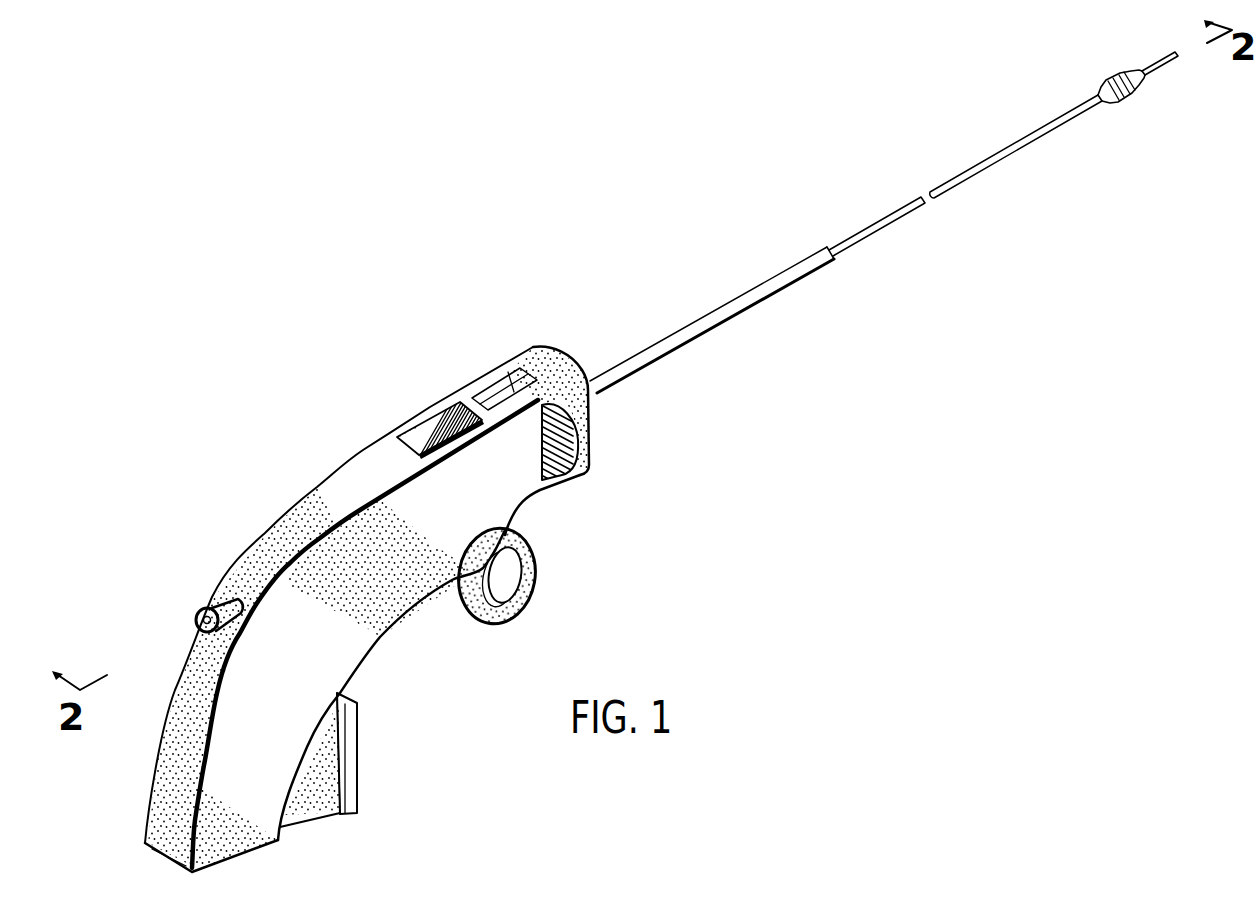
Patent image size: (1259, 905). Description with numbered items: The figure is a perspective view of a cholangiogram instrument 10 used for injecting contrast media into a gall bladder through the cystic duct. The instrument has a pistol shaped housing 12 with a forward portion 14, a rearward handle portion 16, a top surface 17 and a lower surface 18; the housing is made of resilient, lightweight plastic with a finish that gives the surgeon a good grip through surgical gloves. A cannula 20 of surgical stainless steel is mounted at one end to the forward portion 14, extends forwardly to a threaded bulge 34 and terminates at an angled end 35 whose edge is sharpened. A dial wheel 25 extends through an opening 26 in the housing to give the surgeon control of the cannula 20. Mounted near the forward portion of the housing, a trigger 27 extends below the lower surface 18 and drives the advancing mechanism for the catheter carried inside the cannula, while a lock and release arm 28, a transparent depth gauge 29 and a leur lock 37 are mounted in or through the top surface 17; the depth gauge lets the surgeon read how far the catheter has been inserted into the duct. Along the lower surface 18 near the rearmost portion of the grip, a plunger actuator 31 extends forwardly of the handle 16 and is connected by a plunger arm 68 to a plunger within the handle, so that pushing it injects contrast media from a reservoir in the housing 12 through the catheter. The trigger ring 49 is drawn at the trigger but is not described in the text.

The instrument 10 is at (697, 118).
The housing 12 is at (301, 498).
The forward portion 14 is at (584, 368).
The rearward handle portion 16 is at (167, 772).
The top surface 17 is at (356, 472).
The lower surface 18 is at (383, 632).
The cannula 20 is at (849, 234).
The dial wheel 25 is at (580, 474).
The opening 26 is at (543, 460).
The trigger 27 is at (490, 624).
The lock and release arm 28 is at (430, 410).
The depth gauge 29 is at (507, 372).
The plunger actuator 31 is at (358, 770).
The threaded bulge 34 is at (1126, 97).
The angled end 35 is at (1170, 52).
The leur lock 37 is at (205, 606).
The trigger ring 49 is at (521, 594).
The plunger arm 68 is at (320, 822).